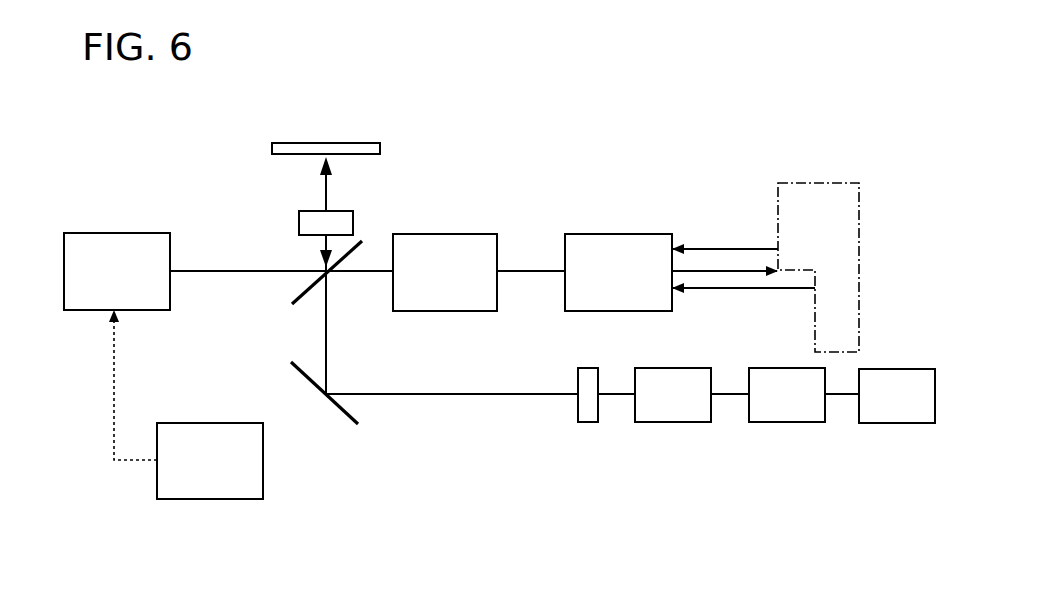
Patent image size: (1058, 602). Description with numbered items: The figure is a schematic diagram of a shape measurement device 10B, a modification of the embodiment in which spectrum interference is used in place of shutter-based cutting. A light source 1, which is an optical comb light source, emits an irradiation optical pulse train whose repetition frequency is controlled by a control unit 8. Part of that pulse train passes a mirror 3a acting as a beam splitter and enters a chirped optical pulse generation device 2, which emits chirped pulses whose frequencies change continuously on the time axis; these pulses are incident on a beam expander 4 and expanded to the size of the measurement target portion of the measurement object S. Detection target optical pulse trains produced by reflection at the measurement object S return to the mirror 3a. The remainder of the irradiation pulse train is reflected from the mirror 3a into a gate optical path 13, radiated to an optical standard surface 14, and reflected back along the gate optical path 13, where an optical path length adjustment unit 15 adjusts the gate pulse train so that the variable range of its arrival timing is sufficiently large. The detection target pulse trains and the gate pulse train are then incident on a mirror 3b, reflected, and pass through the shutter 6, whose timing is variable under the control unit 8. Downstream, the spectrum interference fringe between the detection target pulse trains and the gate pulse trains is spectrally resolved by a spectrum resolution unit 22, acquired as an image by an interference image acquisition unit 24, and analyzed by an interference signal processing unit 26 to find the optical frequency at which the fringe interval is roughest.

The shape measurement device 10B is at (680, 132).
The light source 1 is at (131, 233).
The chirped optical pulse generation device 2 is at (473, 234).
The mirror (beam splitter) 3a is at (302, 288).
The mirror 3b is at (290, 362).
The beam expander 4 is at (635, 234).
The shutter 6 is at (590, 368).
The control unit 8 is at (208, 499).
The gate optical path 13 is at (314, 196).
The optical standard surface 14 is at (366, 143).
The optical path length adjustment unit 15 is at (353, 222).
The spectrum resolution unit 22 is at (670, 422).
The interference image acquisition unit 24 is at (784, 422).
The interference signal processing unit 26 is at (895, 423).
The measurement object S is at (813, 183).